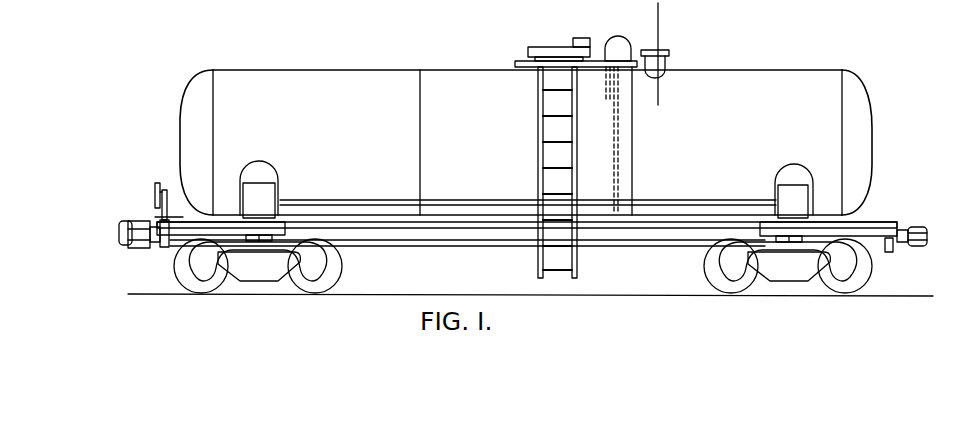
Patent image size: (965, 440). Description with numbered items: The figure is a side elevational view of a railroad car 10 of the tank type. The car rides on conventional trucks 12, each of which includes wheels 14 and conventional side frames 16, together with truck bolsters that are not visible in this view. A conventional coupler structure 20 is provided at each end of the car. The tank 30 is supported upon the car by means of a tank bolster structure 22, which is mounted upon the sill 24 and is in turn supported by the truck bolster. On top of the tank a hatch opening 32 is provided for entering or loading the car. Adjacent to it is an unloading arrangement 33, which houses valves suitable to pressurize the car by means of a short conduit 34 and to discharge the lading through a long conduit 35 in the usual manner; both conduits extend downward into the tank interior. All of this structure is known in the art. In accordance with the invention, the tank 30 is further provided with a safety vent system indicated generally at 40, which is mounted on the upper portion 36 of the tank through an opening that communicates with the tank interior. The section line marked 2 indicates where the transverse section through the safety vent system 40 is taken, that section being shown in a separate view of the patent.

The section line 2- 2 is at (620, 21).
The railroad car 10 is at (793, 65).
The trucks 12 is at (290, 299).
The wheels 14 is at (174, 277).
The side frames 16 is at (258, 284).
The coupler structure 20 is at (122, 222).
The tank bolster structure 22 is at (264, 201).
The sill 24 is at (183, 228).
The tank 30 is at (188, 75).
The hatch opening 32 is at (535, 46).
The unloading arrangement 33 is at (606, 40).
The short conduit 34 is at (607, 89).
The long conduit 35 is at (621, 157).
The upper portion of the tank 36 is at (728, 71).
The safety vent system 40 is at (676, 54).